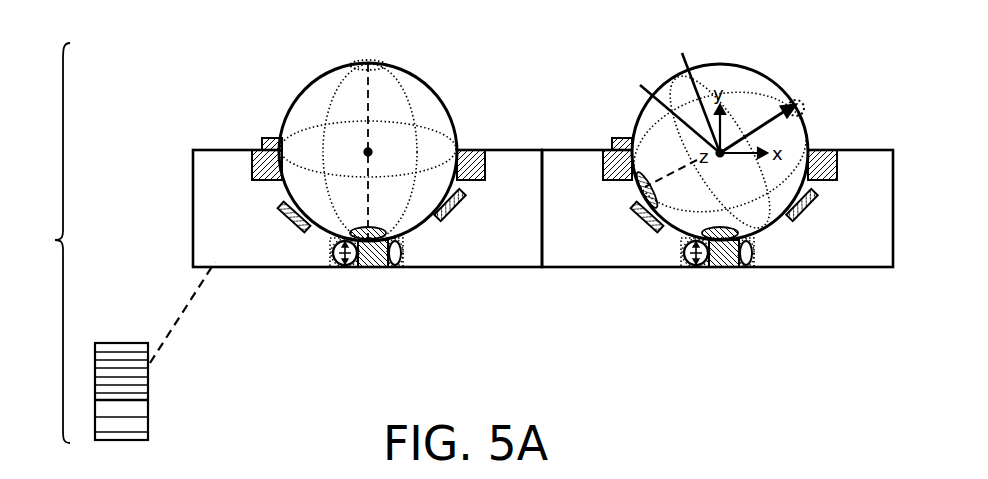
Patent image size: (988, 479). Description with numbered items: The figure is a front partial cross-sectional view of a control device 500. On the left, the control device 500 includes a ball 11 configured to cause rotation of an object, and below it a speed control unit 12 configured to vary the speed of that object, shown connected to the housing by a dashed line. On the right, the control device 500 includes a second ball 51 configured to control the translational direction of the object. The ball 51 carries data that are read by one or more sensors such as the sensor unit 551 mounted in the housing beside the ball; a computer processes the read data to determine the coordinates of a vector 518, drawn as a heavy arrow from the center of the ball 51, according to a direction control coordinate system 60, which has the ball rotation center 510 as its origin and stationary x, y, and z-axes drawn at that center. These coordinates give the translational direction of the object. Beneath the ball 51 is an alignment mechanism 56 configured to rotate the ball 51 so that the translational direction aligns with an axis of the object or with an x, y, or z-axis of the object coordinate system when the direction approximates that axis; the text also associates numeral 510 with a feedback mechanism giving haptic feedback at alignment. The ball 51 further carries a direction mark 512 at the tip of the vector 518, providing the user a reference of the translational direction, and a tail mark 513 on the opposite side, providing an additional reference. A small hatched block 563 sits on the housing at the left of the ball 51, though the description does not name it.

The control device 500 is at (453, 243).
The speed control unit 12 is at (133, 349).
The ball 11 is at (390, 65).
The support sensor block 563 is at (610, 144).
The ball rotation center 510 is at (664, 109).
The direction control coordinate system 60 is at (693, 91).
The ball 51 is at (718, 72).
The vector 518 is at (757, 122).
The direction mark 512 is at (797, 101).
The tail mark 513 is at (641, 185).
The alignment mechanism 56 is at (725, 262).
The sensor unit 551 is at (803, 213).